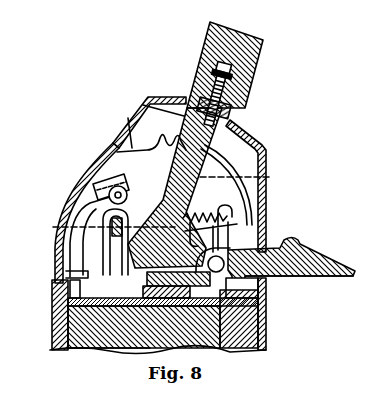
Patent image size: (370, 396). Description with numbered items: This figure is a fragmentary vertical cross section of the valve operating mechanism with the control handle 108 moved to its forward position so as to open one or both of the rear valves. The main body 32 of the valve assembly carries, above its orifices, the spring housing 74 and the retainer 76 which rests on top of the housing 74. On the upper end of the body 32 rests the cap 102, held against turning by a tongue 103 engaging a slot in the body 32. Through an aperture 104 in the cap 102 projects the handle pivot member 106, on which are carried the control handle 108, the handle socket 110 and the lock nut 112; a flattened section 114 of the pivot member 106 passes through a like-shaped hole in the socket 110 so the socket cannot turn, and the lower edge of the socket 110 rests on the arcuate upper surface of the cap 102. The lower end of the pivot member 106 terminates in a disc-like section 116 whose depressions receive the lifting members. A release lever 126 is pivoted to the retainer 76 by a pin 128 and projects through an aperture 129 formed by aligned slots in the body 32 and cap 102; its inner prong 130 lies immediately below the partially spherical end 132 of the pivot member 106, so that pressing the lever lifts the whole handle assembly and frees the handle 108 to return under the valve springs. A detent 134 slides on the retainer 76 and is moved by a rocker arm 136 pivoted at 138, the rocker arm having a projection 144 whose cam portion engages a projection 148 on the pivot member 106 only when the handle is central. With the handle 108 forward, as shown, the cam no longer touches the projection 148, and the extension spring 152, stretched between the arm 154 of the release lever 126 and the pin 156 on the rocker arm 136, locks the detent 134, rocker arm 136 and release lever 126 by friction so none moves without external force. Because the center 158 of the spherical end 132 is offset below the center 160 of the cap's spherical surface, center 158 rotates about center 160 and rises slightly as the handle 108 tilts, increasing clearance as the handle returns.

The main body 32 is at (270, 328).
The spring housing 74 is at (110, 337).
The retainer 76 is at (246, 348).
The cap 102 is at (102, 150).
The tongue 103 is at (60, 283).
The aperture 104 is at (132, 115).
The handle pivot member 106 is at (247, 143).
The control handle 108 is at (252, 57).
The handle socket 110 is at (242, 123).
The lock nut 112 is at (185, 100).
The flattened section 114 is at (242, 93).
The disc-like section 116 is at (262, 238).
The release lever 126 is at (302, 252).
The pin 128 is at (260, 290).
The aperture 129 is at (302, 277).
The prong 130 is at (133, 350).
The partially spherical end 132 is at (78, 350).
The detent 134 is at (52, 300).
The rocker arm 136 is at (95, 196).
The pivot 138 is at (82, 175).
The projection 144 is at (150, 197).
The projection 148 is at (250, 174).
The extension spring 152 is at (207, 218).
The arm 154 is at (258, 215).
The pin 156 is at (93, 213).
The center 158 is at (93, 248).
The center 160 is at (98, 227).